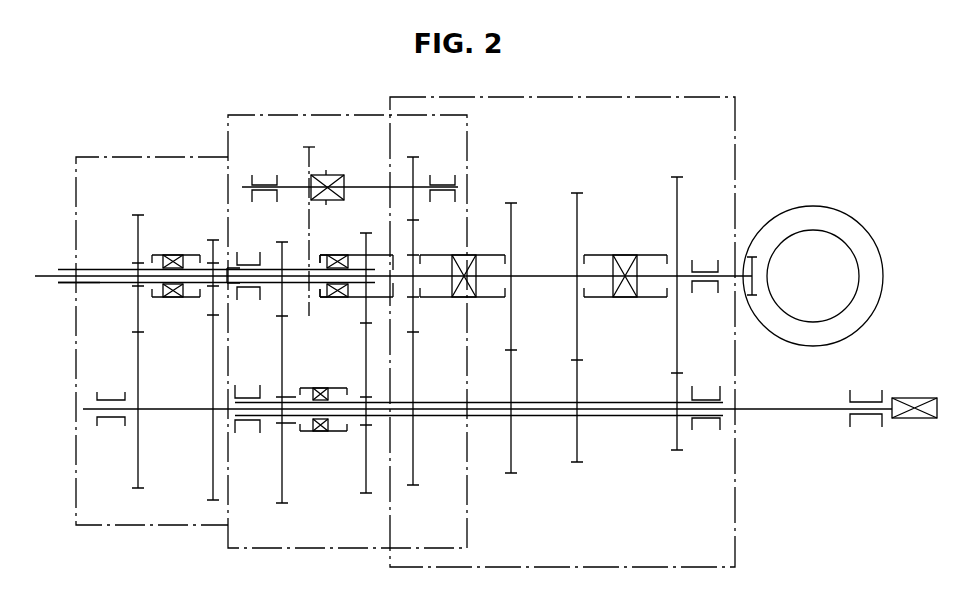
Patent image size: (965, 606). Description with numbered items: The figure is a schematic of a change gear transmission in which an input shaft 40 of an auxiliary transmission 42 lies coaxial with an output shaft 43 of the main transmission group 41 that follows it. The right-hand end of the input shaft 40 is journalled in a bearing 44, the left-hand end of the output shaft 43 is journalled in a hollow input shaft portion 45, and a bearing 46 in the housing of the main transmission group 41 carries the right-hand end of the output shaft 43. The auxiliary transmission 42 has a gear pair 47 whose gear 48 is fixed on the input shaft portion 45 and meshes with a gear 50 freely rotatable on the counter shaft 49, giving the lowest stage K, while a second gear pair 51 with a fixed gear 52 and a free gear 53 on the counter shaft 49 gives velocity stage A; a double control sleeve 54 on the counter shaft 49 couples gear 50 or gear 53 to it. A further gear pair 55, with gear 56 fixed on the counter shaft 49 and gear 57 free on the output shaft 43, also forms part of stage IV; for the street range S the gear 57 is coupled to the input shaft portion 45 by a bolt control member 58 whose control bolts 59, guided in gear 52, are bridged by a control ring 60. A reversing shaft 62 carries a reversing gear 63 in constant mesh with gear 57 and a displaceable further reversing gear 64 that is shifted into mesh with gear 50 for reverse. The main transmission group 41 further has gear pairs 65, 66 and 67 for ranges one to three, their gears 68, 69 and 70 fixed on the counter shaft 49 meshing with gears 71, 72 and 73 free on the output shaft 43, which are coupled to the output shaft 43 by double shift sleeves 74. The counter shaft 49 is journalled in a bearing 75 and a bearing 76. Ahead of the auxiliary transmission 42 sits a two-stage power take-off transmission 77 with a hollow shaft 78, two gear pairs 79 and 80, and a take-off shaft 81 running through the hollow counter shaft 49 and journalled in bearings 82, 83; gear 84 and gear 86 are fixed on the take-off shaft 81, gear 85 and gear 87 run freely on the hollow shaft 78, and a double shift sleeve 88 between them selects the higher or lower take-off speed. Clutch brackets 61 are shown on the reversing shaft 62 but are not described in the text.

The input shaft 40 is at (40, 273).
The main transmission group 41 is at (656, 97).
The auxiliary transmission 42 is at (314, 113).
The output shaft 43 is at (537, 275).
The bearing 44 is at (245, 258).
The hollow input shaft portion 45 is at (315, 262).
The bearing 46 is at (702, 268).
The gear pair 47 is at (271, 338).
The gear 48 is at (283, 242).
The counter shaft 49 is at (434, 401).
The gear 50 is at (284, 492).
The second gear pair 51 is at (346, 351).
The gear 52 is at (364, 233).
The gear 53 is at (362, 484).
The double control sleeve 54 is at (316, 428).
The gear pair 55 is at (404, 360).
The gear 56 is at (413, 468).
The gear 57 is at (418, 242).
The bolt control member 58 is at (291, 316).
The control bolts 59 is at (350, 298).
The control ring 60 is at (336, 257).
The clutch 61 is at (262, 176).
The reversing shaft 62 is at (358, 186).
The reversing gear 63 is at (414, 157).
The further reversing gear 64 is at (304, 143).
The gear pair 65 is at (692, 343).
The gear pair 66 is at (597, 347).
The gear pair 67 is at (527, 343).
The gear 68 is at (678, 451).
The gear 69 is at (578, 463).
The gear 70 is at (512, 474).
The gear 71 is at (678, 177).
The gear 72 is at (578, 192).
The gear 73 is at (512, 203).
The double shift sleeve 74 is at (473, 254).
The bearing 75 is at (718, 427).
The bearing 76 is at (246, 433).
The power take-off transmission 77 is at (154, 156).
The hollow shaft 78 is at (83, 286).
The gear pair 79 is at (118, 340).
The gear pair 80 is at (185, 348).
The take-off shaft 81 is at (817, 411).
The bearing 82 is at (867, 420).
The bearing 83 is at (107, 420).
The gear 84 is at (136, 468).
The gear 85 is at (135, 228).
The gear 86 is at (212, 467).
The gear 87 is at (211, 240).
The double shift sleeve 88 is at (172, 255).